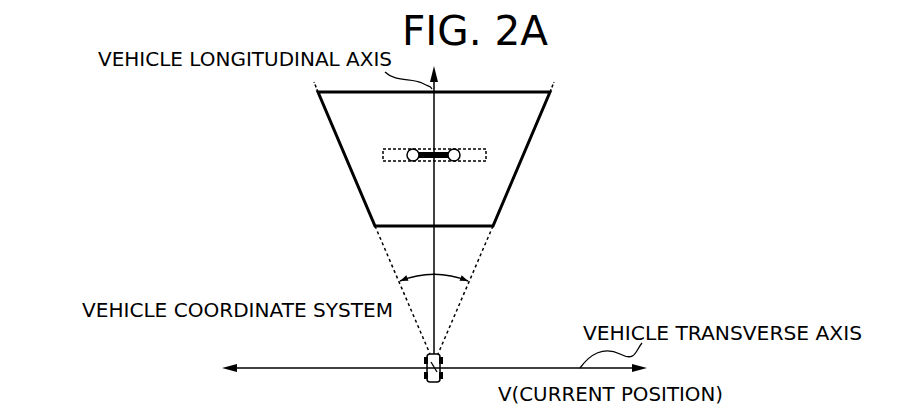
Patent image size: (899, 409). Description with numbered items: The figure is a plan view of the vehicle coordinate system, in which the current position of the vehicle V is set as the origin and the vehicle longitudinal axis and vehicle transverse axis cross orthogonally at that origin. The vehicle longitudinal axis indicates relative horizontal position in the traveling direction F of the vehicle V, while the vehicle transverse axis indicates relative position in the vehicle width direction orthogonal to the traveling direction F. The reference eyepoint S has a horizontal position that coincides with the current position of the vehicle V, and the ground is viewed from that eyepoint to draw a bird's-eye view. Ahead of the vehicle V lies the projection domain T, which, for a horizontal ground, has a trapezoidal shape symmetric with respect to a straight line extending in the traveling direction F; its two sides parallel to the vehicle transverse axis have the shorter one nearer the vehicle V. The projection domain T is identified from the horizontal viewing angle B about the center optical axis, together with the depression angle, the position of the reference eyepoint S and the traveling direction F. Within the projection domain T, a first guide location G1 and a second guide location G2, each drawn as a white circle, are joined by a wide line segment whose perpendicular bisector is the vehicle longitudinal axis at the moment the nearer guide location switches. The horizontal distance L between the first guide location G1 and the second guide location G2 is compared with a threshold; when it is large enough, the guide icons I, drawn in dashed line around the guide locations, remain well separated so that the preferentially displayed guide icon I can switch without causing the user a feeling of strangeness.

The traveling direction F is at (443, 208).
The projection domain T is at (546, 103).
The guide icon I is at (400, 162).
The first guide location G1 is at (405, 148).
The second guide location G2 is at (465, 148).
The horizontal distance L is at (437, 148).
The viewing angle B is at (432, 276).
The reference eyepoint S is at (444, 363).
The vehicle V is at (497, 389).